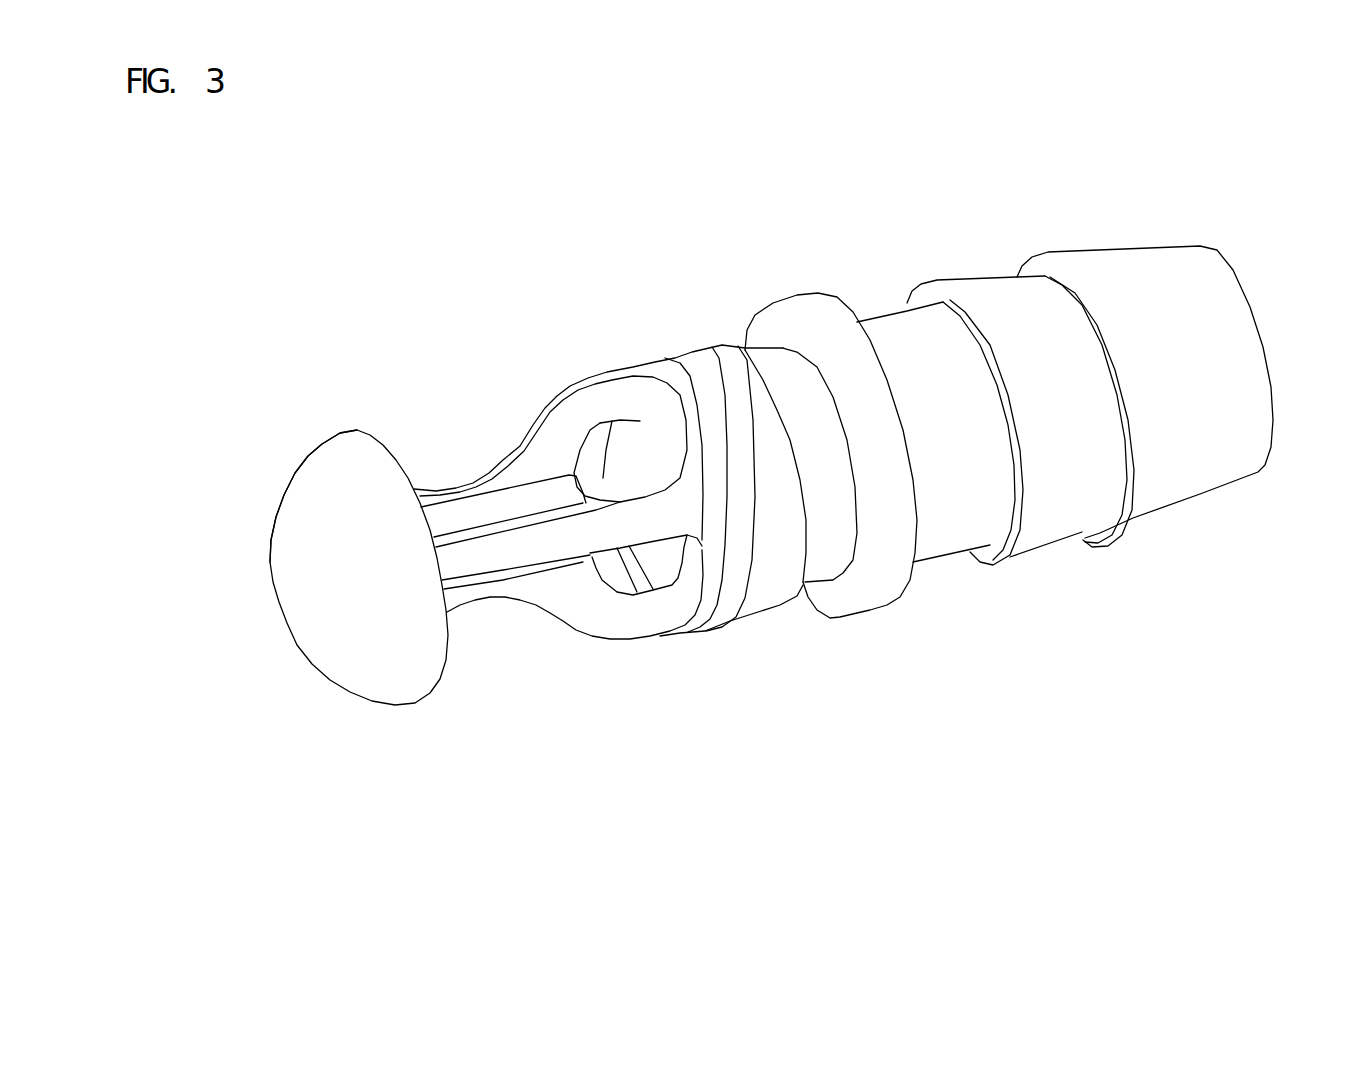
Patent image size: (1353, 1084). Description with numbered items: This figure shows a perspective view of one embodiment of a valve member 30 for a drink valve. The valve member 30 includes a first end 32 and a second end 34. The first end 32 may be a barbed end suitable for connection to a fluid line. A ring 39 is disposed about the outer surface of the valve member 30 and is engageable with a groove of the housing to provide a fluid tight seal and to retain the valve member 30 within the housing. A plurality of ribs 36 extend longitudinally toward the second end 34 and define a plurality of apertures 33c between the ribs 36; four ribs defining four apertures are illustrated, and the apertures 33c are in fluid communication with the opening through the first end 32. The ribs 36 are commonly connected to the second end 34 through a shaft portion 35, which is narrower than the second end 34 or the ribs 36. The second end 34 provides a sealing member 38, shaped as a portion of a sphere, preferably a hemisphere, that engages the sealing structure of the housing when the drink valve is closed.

The valve member 30 is at (874, 266).
The first end 32 is at (1242, 278).
The apertures 33c is at (638, 457).
The second end 34 is at (283, 493).
The shaft portion 35 is at (489, 587).
The ribs 36 is at (553, 393).
The sealing member 38 is at (322, 672).
The ring 39 is at (788, 291).